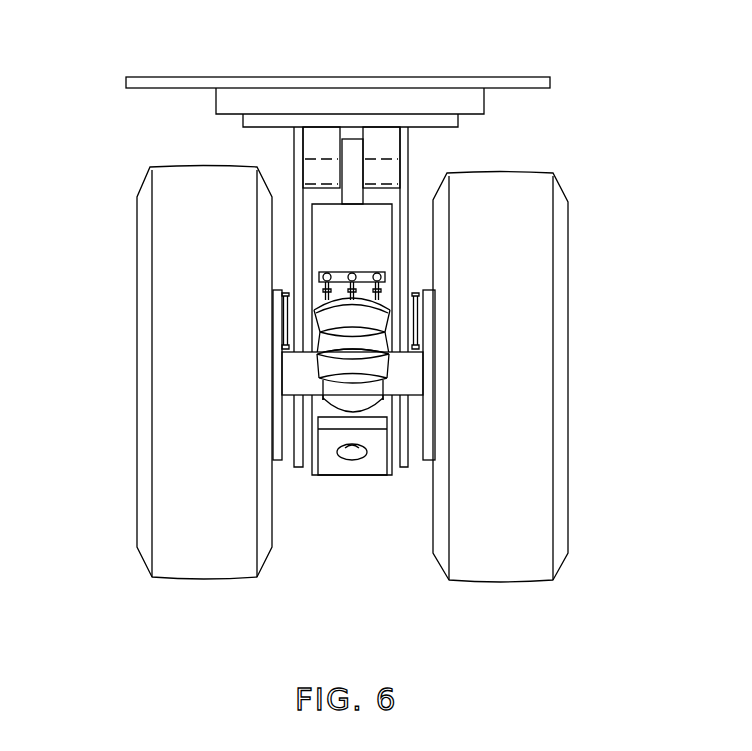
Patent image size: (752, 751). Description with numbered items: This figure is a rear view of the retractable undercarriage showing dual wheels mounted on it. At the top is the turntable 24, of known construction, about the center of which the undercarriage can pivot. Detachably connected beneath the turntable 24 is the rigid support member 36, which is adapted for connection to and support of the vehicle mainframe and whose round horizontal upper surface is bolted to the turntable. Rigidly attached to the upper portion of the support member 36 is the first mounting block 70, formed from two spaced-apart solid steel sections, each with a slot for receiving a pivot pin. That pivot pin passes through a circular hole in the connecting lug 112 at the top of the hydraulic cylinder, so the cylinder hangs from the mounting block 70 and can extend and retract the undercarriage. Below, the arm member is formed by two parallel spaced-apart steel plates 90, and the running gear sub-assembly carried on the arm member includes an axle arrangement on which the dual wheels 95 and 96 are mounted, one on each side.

The turntable 24 is at (405, 102).
The rigid support member 36 is at (405, 167).
The first mounting block 70 is at (320, 146).
The connecting lug 112 is at (370, 147).
The steel plates 90 is at (390, 474).
The dual wheel 95 is at (155, 358).
The dual wheel 96 is at (558, 368).